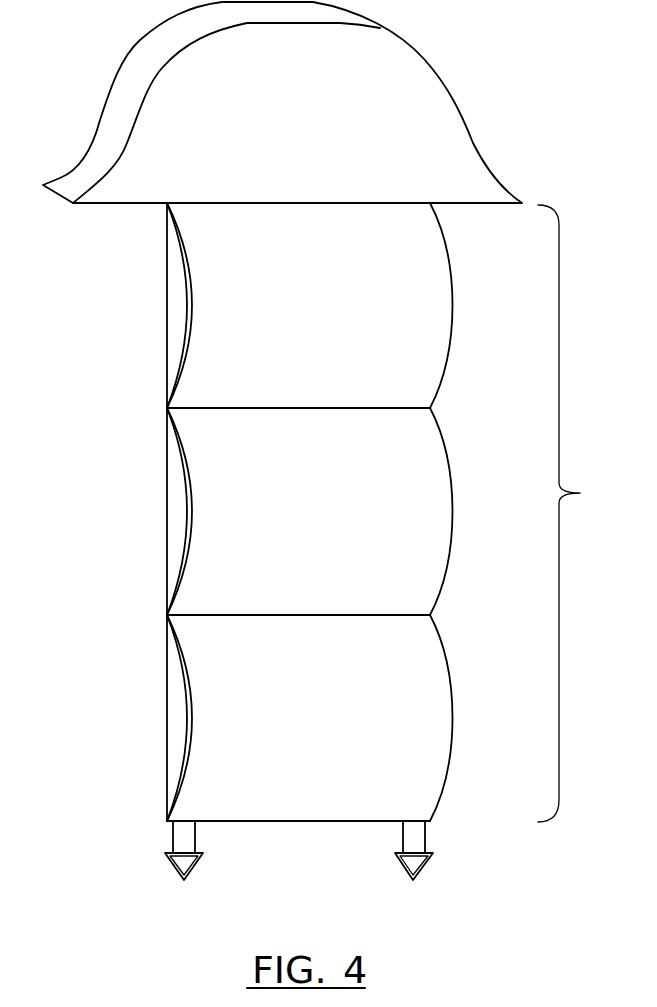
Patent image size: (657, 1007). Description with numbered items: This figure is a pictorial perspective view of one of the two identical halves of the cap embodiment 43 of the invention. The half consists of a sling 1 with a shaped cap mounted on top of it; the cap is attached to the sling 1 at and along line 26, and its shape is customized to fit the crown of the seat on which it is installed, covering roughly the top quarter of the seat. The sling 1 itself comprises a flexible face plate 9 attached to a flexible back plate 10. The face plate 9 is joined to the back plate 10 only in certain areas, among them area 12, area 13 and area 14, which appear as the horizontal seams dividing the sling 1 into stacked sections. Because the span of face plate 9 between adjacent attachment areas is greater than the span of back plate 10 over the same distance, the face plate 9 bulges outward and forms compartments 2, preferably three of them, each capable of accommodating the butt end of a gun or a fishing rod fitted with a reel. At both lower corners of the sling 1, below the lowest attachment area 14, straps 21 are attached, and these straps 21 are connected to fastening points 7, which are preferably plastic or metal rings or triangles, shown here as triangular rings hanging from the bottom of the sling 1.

The sling 1 is at (386, 512).
The compartments 2 is at (173, 280).
The fastening points 7 is at (193, 876).
The face plate 9 is at (453, 702).
The back plate 10 is at (168, 717).
The area 12 is at (387, 408).
The area 13 is at (392, 616).
The area 14 is at (363, 821).
The straps 21 is at (170, 833).
The line 26 is at (248, 205).
The cap embodiment 43 is at (106, 399).